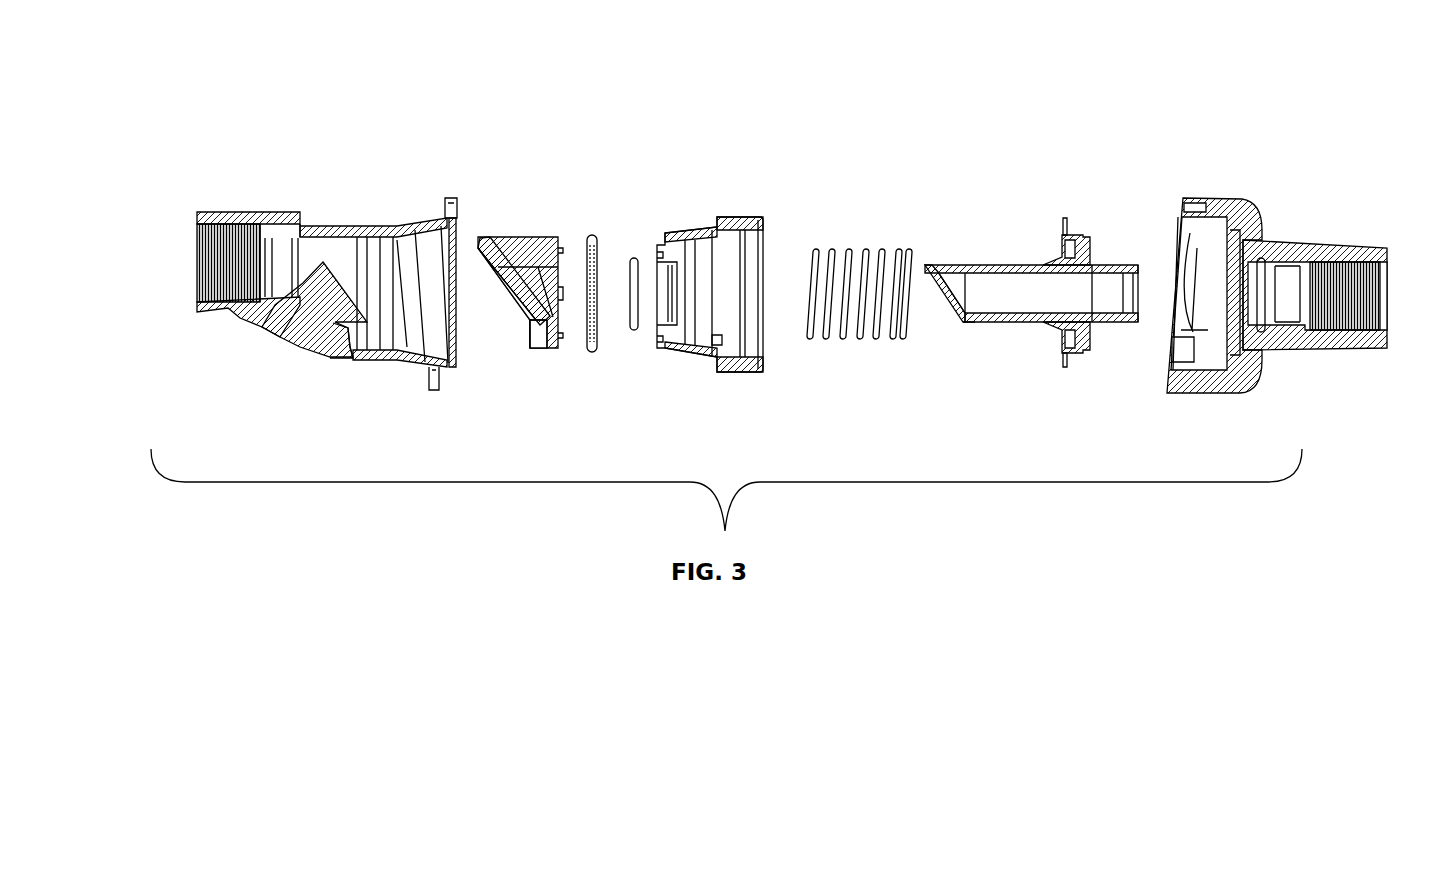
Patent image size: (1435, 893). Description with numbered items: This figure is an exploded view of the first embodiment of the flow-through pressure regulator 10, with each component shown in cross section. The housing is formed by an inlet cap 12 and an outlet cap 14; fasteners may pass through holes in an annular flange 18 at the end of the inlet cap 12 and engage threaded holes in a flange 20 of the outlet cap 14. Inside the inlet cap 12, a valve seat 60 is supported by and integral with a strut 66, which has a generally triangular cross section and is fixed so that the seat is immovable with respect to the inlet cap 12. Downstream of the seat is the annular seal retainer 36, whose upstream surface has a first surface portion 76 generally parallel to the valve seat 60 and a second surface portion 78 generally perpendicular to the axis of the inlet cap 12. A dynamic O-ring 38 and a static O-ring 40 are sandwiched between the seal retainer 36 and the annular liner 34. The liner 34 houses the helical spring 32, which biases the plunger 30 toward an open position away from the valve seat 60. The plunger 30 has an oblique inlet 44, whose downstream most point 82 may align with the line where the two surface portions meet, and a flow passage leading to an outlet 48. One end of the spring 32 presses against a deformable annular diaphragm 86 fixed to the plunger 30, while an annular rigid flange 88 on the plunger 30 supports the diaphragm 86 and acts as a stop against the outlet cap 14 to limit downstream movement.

The pressure regulator 10 is at (697, 59).
The inlet cap 12 is at (328, 228).
The outlet cap 14 is at (1275, 240).
The annular flange 18 is at (450, 197).
The flange 20 is at (1208, 202).
The plunger 30 is at (1003, 323).
The helical spring 32 is at (847, 340).
The annular liner 34 is at (735, 373).
The annular seal retainer 36 is at (537, 350).
The dynamic O-ring 38 is at (633, 260).
The static O-ring 40 is at (590, 237).
The oblique inlet 44 is at (932, 275).
The outlet 48 is at (1140, 303).
The valve seat 60 is at (350, 358).
The strut 66 is at (293, 327).
The first surface portion 76 is at (480, 257).
The second surface portion 78 is at (528, 333).
The downstream most point 82 is at (962, 320).
The deformable annular diaphragm 86 is at (1068, 367).
The annular rigid flange 88 is at (1087, 250).